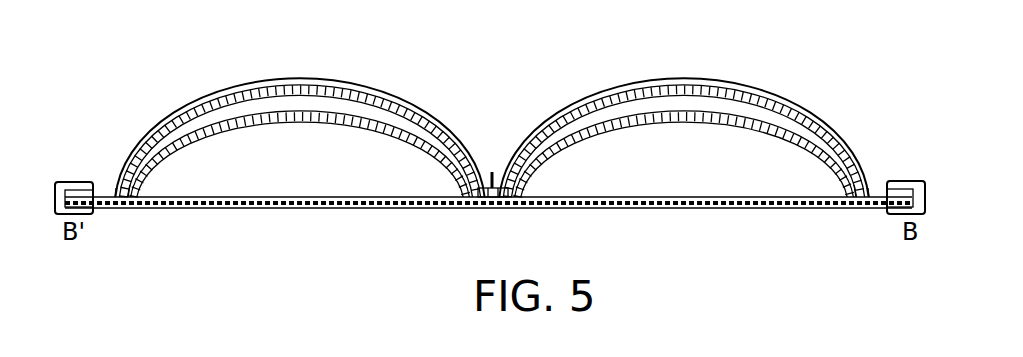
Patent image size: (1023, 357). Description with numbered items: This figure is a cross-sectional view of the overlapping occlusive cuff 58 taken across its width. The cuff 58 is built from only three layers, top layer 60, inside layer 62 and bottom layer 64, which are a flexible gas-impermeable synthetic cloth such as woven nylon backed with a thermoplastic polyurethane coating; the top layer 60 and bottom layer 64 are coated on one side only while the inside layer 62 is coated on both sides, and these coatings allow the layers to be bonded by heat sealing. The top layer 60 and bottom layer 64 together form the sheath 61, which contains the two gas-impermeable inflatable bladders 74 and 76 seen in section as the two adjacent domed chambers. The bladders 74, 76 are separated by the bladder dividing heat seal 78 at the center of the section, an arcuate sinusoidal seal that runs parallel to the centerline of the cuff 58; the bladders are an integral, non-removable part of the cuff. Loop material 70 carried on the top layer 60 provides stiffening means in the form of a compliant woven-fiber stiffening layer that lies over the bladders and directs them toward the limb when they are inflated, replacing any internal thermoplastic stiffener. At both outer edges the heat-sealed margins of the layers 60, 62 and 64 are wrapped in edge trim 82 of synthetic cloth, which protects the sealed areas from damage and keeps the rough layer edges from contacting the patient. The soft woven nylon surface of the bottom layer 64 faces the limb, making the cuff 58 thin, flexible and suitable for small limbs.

The cuff 58 is at (215, 210).
The top layer 60 is at (492, 165).
The sheath 61 is at (530, 68).
The inside layer 62 is at (122, 147).
The bottom layer 64 is at (582, 198).
The loop material 70 is at (310, 84).
The inflatable bladder 74 is at (645, 170).
The inflatable bladder 76 is at (264, 170).
The bladder dividing heat seal 78 is at (484, 207).
The edge trim 82 is at (920, 195).